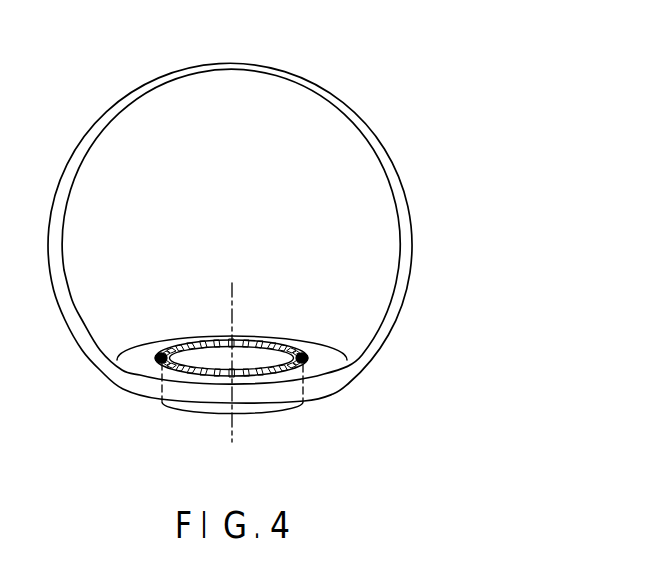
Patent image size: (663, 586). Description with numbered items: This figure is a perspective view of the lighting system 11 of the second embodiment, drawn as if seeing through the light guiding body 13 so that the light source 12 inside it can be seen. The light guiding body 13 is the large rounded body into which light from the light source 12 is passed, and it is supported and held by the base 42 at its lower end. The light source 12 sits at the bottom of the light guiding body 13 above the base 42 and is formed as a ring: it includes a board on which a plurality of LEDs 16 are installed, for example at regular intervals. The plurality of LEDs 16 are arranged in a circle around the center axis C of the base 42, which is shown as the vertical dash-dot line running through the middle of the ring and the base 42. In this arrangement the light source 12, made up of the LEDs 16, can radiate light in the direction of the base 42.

The lighting system 11 is at (270, 254).
The light guiding body 13 is at (404, 208).
The light source 12 is at (248, 322).
The LEDs 16 is at (206, 340).
The base 42 is at (259, 409).
The center axis C is at (236, 300).